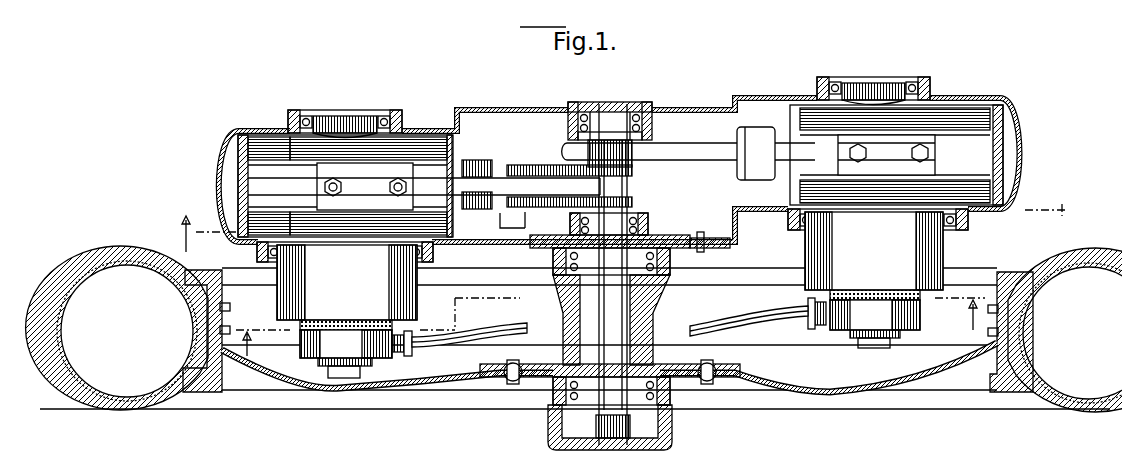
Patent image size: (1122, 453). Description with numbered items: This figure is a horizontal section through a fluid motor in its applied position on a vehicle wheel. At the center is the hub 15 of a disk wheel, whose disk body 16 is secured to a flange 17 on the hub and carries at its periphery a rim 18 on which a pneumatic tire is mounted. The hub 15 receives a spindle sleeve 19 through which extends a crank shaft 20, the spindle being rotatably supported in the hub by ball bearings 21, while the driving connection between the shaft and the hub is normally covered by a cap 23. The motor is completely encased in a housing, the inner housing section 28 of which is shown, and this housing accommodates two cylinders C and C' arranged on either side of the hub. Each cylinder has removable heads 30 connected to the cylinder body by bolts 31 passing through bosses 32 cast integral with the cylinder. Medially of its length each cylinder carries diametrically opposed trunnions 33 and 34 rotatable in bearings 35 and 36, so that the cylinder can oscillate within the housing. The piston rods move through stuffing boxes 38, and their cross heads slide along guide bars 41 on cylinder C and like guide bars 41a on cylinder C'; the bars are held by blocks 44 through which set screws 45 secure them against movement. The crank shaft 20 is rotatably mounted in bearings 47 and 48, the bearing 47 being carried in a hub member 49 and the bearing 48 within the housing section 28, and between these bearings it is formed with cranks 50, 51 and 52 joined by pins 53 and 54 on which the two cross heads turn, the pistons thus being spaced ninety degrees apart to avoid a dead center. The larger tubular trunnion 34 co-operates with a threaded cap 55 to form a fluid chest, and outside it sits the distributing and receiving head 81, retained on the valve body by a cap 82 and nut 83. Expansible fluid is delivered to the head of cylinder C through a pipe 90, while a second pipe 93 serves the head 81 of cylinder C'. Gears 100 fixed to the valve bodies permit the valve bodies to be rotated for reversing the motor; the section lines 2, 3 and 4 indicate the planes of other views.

The section line 2- 2 is at (610, 328).
The section line 3- 3 is at (627, 225).
The vertical shaft / section 4- 4 is at (610, 68).
The hub 15 is at (690, 380).
The disk body 16 is at (860, 392).
The flange 17 is at (722, 371).
The rim 18 is at (1000, 392).
The spindle sleeve 19 is at (652, 322).
The crank shaft 20 is at (652, 237).
The ball bearings 21 is at (672, 258).
The cap 23 is at (550, 442).
The housing section 28 is at (705, 109).
The removable heads 30 is at (240, 168).
The bolts 31 is at (238, 136).
The bosses 32 is at (268, 145).
The trunnion 33 is at (338, 128).
The trunnion 34 is at (322, 267).
The bearing 35 is at (388, 120).
The bearing 36 is at (436, 258).
The stuffing boxes 38 is at (470, 166).
The guide bars 41 is at (540, 188).
The guide bars 41a is at (707, 153).
The blocks 44 is at (357, 176).
The set screws 45 is at (325, 186).
The bearing 47 is at (634, 224).
The bearing 48 is at (638, 106).
The hub member 49 is at (690, 241).
The crank 50 is at (565, 208).
The crank 51 is at (550, 166).
The crank 52 is at (646, 134).
The pin 53 is at (508, 221).
The pin 54 is at (638, 172).
The threaded cap 55 is at (347, 287).
The distributing and receiving head 81 is at (346, 344).
The cap 82 is at (327, 366).
The nut 83 is at (347, 380).
The pipe 90 is at (445, 346).
The pipe 93 is at (800, 324).
The gears 100 is at (400, 318).
The cylinder C is at (390, 195).
The cylinder C' is at (881, 146).